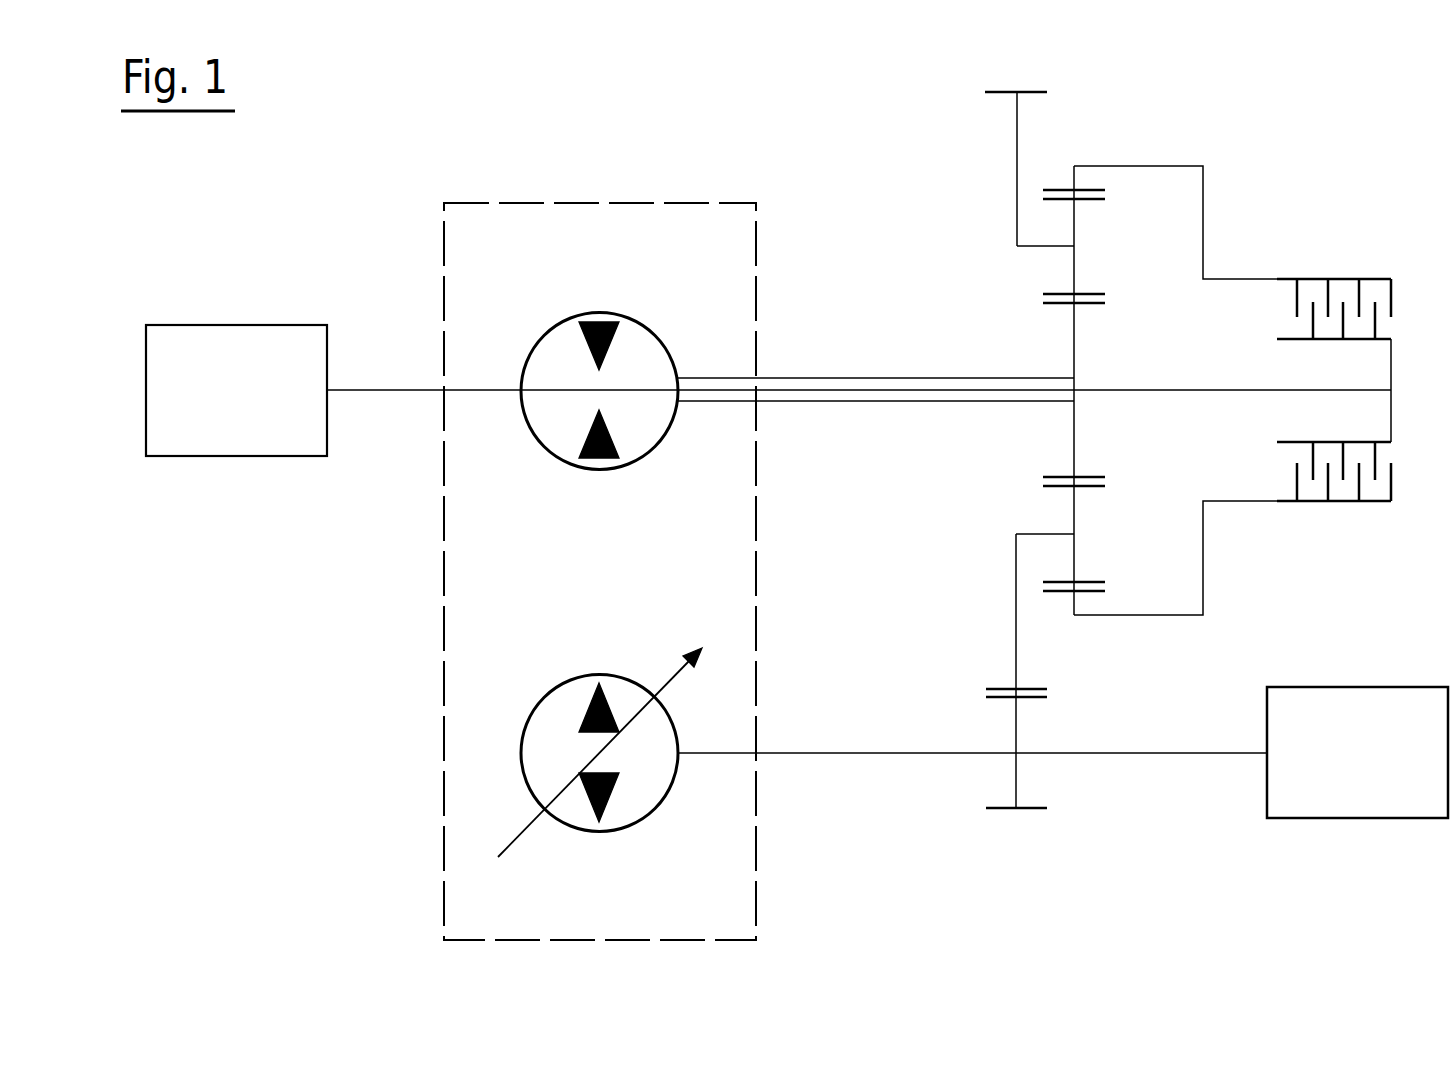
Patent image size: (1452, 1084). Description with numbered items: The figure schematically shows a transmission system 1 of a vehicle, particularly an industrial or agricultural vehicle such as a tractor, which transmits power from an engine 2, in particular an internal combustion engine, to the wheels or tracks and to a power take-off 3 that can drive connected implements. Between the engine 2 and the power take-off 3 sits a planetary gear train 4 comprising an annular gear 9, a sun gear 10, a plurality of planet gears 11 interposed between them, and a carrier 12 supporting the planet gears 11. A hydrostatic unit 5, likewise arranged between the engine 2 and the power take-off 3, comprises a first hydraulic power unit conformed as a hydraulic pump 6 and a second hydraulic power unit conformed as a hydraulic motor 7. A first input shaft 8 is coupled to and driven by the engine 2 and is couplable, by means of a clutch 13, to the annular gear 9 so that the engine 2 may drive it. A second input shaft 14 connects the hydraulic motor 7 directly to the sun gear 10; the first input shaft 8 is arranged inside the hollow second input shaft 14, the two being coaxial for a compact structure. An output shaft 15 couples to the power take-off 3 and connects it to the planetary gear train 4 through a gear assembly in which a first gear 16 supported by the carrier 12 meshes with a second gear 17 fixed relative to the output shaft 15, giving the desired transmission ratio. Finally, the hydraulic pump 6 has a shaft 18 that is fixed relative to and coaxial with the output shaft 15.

The transmission system 1 is at (830, 110).
The engine 2 is at (228, 408).
The power take-off 3 is at (1366, 796).
The planetary gear train 4 is at (1242, 135).
The hydrostatic unit 5 is at (444, 860).
The hydraulic pump 6 is at (540, 702).
The hydraulic motor 7 is at (660, 333).
The first input shaft 8 is at (388, 390).
The annular gear 9 is at (1074, 180).
The sun gear 10 is at (1074, 343).
The planet gears 11 is at (1074, 268).
The carrier 12 is at (1034, 534).
The clutch 13 is at (1265, 485).
The second input shaft 14 is at (858, 403).
The output shaft 15 is at (1112, 755).
The first gear 16 is at (1016, 627).
The second gear 17 is at (1017, 776).
The shaft 18 is at (843, 755).